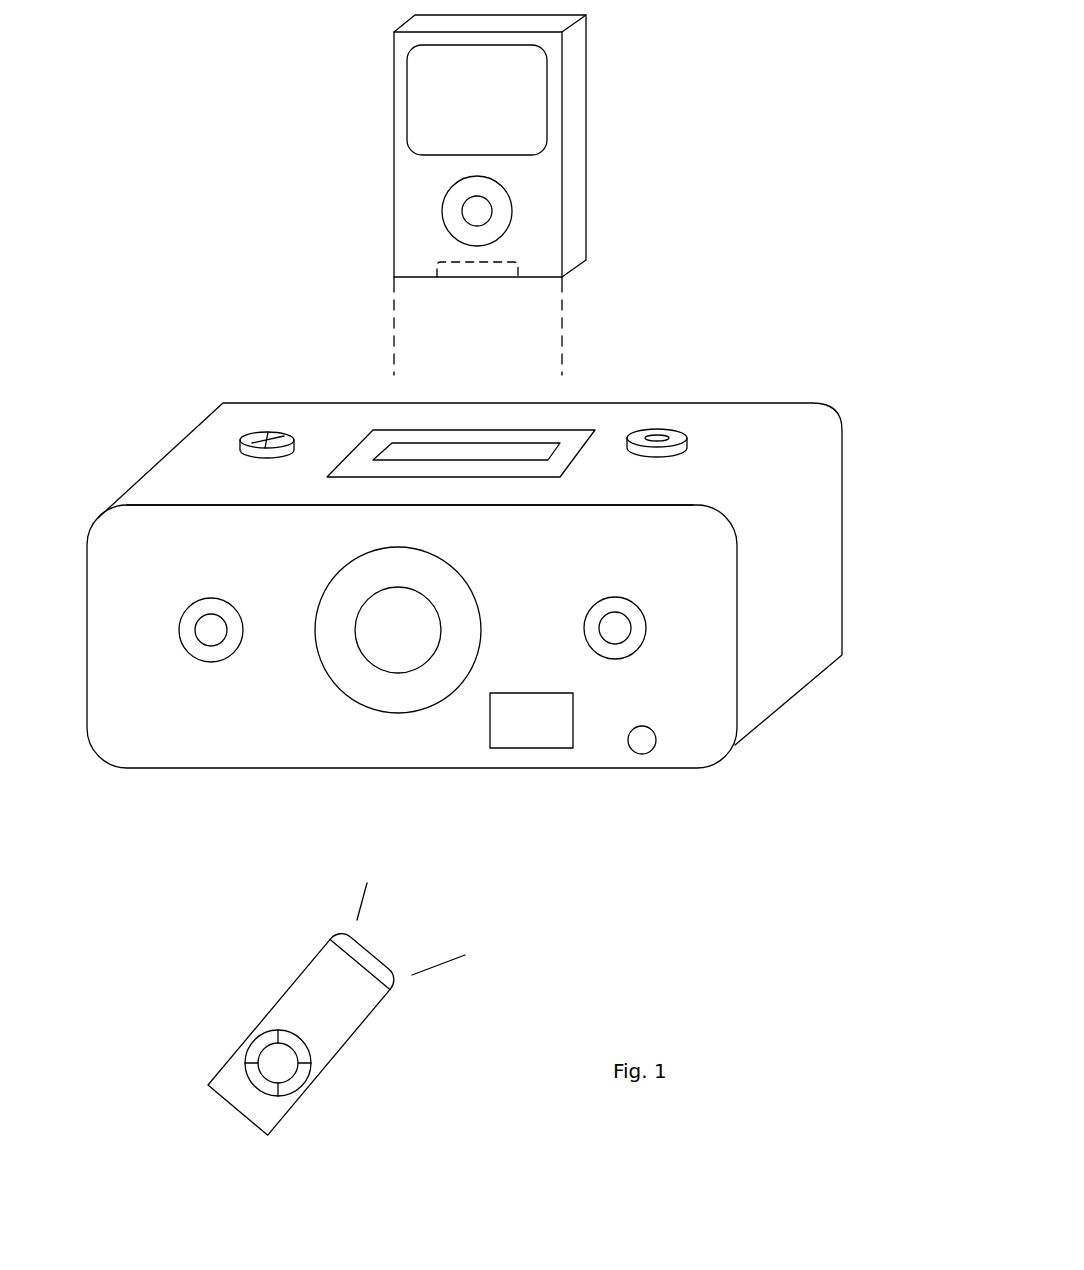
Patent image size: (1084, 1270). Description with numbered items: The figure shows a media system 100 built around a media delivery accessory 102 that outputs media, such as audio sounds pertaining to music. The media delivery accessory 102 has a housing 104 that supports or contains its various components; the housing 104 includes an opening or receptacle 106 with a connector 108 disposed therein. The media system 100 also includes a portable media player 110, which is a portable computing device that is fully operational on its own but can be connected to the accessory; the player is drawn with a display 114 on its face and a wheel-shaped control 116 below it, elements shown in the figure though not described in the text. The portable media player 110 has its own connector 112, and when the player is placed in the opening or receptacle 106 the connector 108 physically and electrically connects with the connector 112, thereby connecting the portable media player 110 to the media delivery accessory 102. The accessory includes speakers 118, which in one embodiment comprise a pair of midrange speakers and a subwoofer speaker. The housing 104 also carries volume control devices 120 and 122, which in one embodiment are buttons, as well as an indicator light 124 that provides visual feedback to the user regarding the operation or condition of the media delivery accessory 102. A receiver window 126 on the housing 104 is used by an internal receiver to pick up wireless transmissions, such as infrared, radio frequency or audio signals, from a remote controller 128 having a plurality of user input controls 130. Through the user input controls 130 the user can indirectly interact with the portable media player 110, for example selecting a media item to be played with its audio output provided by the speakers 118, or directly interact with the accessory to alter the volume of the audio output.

The media system 100 is at (190, 165).
The media delivery accessory 102 is at (121, 558).
The housing 104 is at (783, 392).
The opening or receptacle 106 is at (373, 437).
The connector 108 is at (512, 442).
The portable media player 110 is at (586, 153).
The connector 112 is at (420, 273).
The display screen 114 is at (477, 100).
The click wheel 116 is at (512, 211).
The speakers 118 is at (211, 662).
The volume control device 120 is at (265, 437).
The volume control device 122 is at (657, 432).
The indicator light 124 is at (640, 742).
The receiver window 126 is at (513, 733).
The remote controller 128 is at (353, 1036).
The user input controls 130 is at (252, 1032).